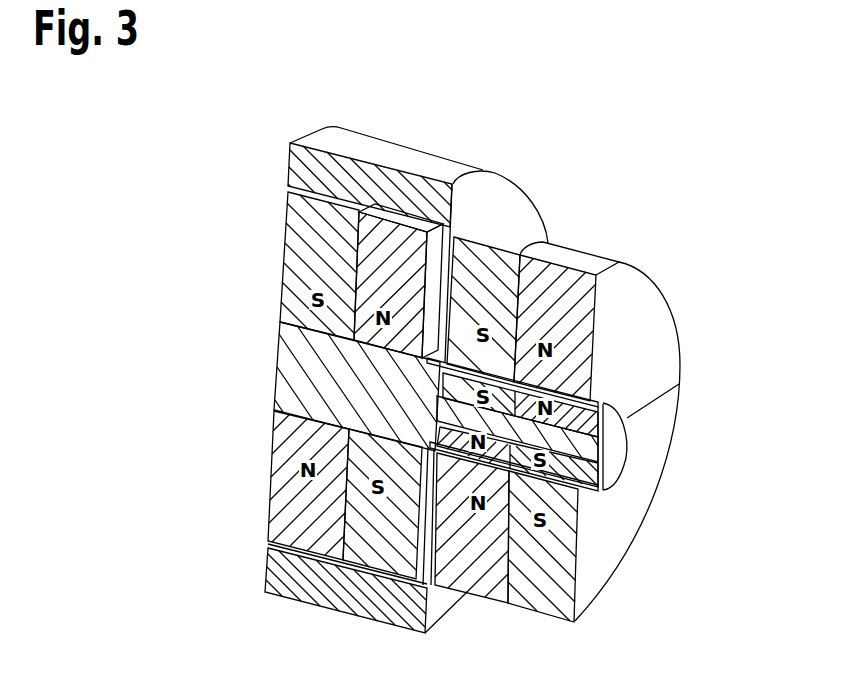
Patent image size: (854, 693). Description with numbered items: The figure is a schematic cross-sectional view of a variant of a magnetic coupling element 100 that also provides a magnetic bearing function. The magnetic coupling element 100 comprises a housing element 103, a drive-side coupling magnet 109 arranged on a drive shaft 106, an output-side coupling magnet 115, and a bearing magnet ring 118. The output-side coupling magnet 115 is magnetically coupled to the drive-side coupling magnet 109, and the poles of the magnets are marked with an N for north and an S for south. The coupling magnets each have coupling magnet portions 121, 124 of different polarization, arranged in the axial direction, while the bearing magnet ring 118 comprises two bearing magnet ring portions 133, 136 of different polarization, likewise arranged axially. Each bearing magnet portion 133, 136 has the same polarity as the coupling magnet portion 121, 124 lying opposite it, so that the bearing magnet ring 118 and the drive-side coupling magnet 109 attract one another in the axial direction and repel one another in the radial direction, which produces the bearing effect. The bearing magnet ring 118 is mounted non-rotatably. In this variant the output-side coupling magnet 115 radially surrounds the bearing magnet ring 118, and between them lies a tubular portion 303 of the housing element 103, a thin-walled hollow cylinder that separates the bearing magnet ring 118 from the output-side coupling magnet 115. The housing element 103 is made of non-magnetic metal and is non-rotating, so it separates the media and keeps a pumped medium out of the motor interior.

The magnetic coupling element 100 is at (208, 163).
The housing element 103 is at (376, 183).
The drive shaft 106 is at (322, 363).
The drive-side coupling magnet 109 is at (340, 276).
The output-side coupling magnet 115 is at (632, 549).
The bearing magnet ring 118 is at (600, 421).
The coupling magnet portion 121 is at (484, 280).
The coupling magnet portion 124 is at (571, 318).
The bearing magnet ring portion 133 is at (573, 313).
The bearing magnet ring portion 136 is at (566, 380).
The tubular portion 303 is at (566, 385).